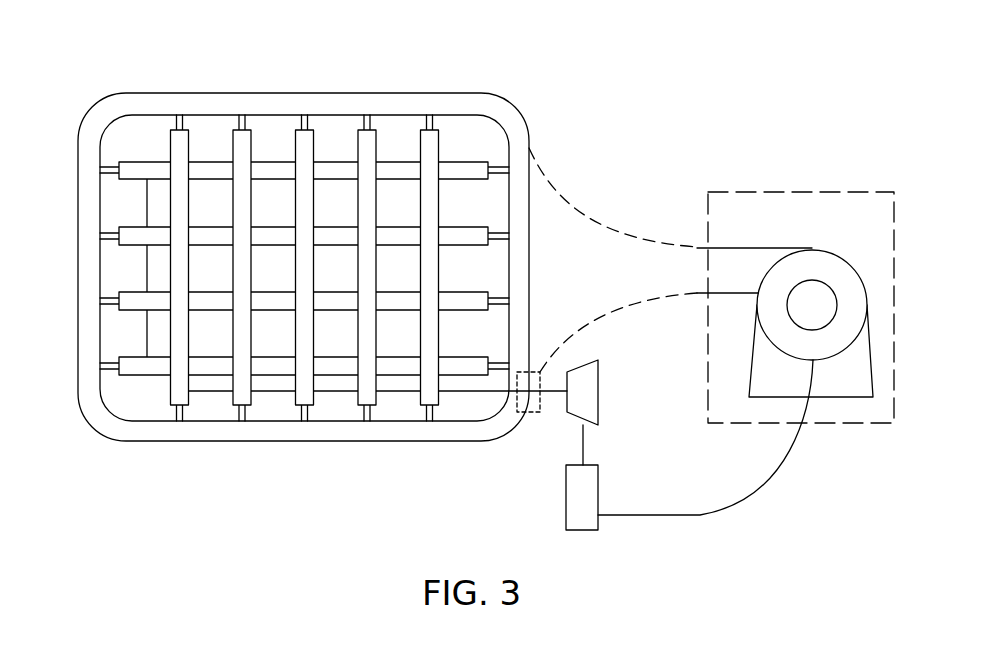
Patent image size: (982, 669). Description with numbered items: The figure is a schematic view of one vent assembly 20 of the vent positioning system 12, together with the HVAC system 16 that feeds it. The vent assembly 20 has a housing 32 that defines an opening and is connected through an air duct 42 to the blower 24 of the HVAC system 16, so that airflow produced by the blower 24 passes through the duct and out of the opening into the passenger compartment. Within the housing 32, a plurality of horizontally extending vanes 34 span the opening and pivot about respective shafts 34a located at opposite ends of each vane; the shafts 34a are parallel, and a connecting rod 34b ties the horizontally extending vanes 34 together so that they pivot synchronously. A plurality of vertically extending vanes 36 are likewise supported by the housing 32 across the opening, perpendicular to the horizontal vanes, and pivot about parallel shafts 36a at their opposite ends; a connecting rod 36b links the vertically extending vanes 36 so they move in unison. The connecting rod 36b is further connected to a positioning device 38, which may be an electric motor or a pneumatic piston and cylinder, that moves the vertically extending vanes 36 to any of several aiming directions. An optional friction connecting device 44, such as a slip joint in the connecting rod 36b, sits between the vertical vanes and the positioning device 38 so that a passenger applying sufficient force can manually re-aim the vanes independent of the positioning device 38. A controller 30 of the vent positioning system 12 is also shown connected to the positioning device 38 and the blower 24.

The vent positioning system 12 is at (708, 68).
The HVAC system 16 is at (779, 190).
The vent assembly 20 is at (451, 92).
The blower 24 is at (849, 263).
The controller 30 is at (600, 488).
The housing 32 is at (103, 113).
The horizontally extending vanes 34 is at (131, 226).
The shafts 34a is at (110, 166).
The connecting rod 34b is at (147, 332).
The vertically extending vanes 36 is at (233, 148).
The shafts 36a is at (177, 123).
The connecting rod 36b is at (393, 392).
The positioning device 38 is at (600, 375).
The air duct 42 is at (600, 217).
The friction connecting device 44 is at (537, 413).